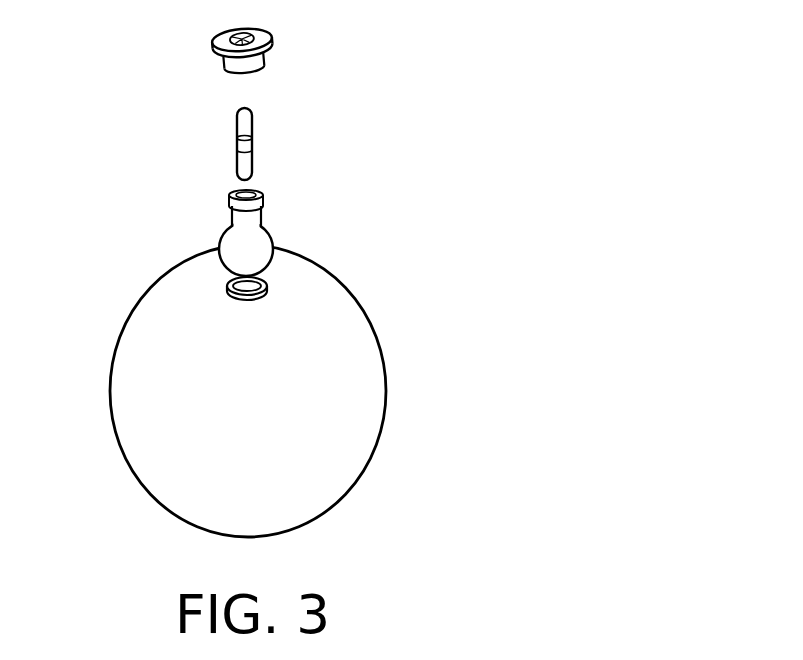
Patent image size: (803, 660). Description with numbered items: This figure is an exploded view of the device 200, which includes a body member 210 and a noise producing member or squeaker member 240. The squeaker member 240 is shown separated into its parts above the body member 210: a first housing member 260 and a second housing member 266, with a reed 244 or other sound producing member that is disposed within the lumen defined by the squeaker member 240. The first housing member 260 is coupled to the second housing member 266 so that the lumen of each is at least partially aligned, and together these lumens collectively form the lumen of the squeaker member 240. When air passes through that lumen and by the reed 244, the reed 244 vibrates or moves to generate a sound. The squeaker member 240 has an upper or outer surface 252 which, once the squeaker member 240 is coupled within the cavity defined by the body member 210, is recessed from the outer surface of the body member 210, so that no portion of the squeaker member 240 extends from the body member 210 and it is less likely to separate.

The device 200 is at (128, 190).
The body member 210 is at (371, 371).
The squeaker member 240 is at (296, 114).
The reed 244 is at (243, 150).
The upper or outer surface 252 is at (263, 38).
The first housing member 260 is at (212, 55).
The second housing member 266 is at (232, 244).